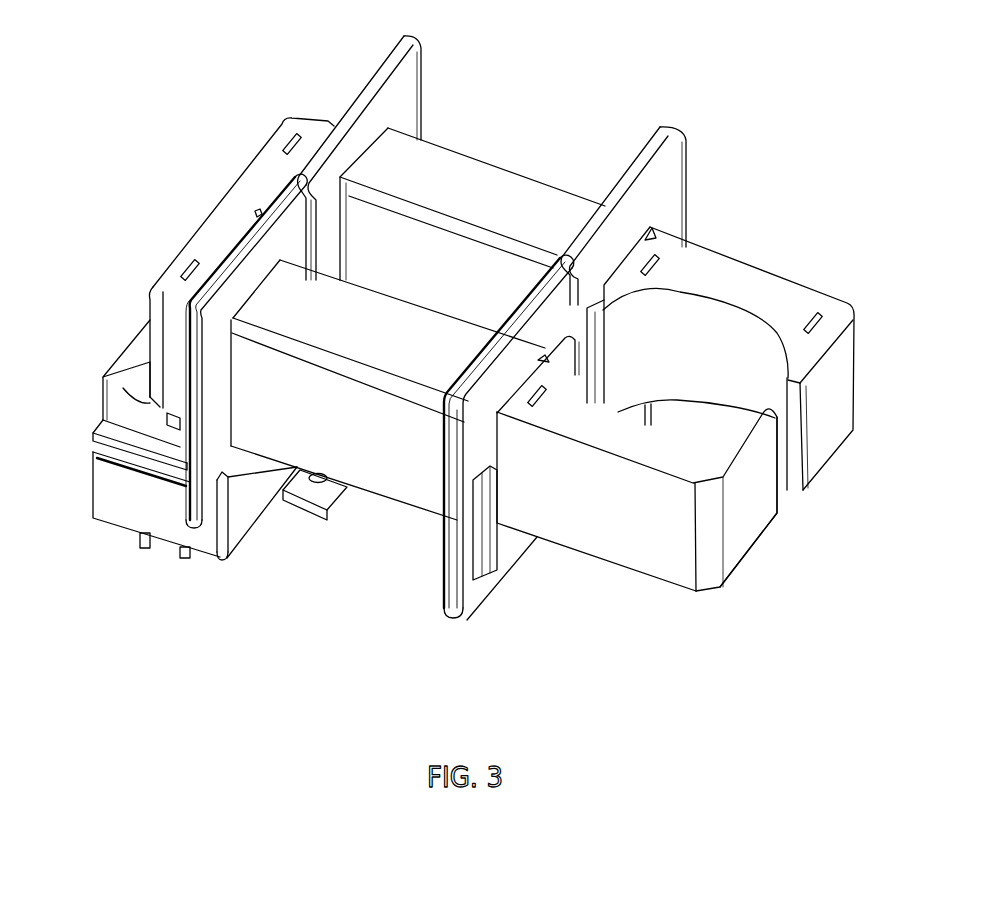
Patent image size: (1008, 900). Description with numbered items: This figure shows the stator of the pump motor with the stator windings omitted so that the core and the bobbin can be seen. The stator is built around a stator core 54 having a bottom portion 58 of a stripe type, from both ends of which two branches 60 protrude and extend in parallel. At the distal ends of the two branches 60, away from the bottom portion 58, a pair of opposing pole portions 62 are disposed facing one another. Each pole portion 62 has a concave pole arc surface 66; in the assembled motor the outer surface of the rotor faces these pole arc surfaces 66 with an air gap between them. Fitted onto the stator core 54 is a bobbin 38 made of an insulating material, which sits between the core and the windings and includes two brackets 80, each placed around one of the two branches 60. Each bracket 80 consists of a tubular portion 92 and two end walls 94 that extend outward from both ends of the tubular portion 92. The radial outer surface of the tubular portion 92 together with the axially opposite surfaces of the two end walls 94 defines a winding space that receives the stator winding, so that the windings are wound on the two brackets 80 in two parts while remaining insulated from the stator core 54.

The bobbin 38 is at (124, 497).
The stator core 54 is at (760, 490).
The bottom portion 58 is at (223, 217).
The branches 60 is at (640, 247).
The pole portions 62 is at (742, 293).
The pole arc surface 66 is at (733, 339).
The brackets 80 is at (403, 467).
The tubular portion 92 is at (487, 186).
The end walls 94 is at (405, 83).